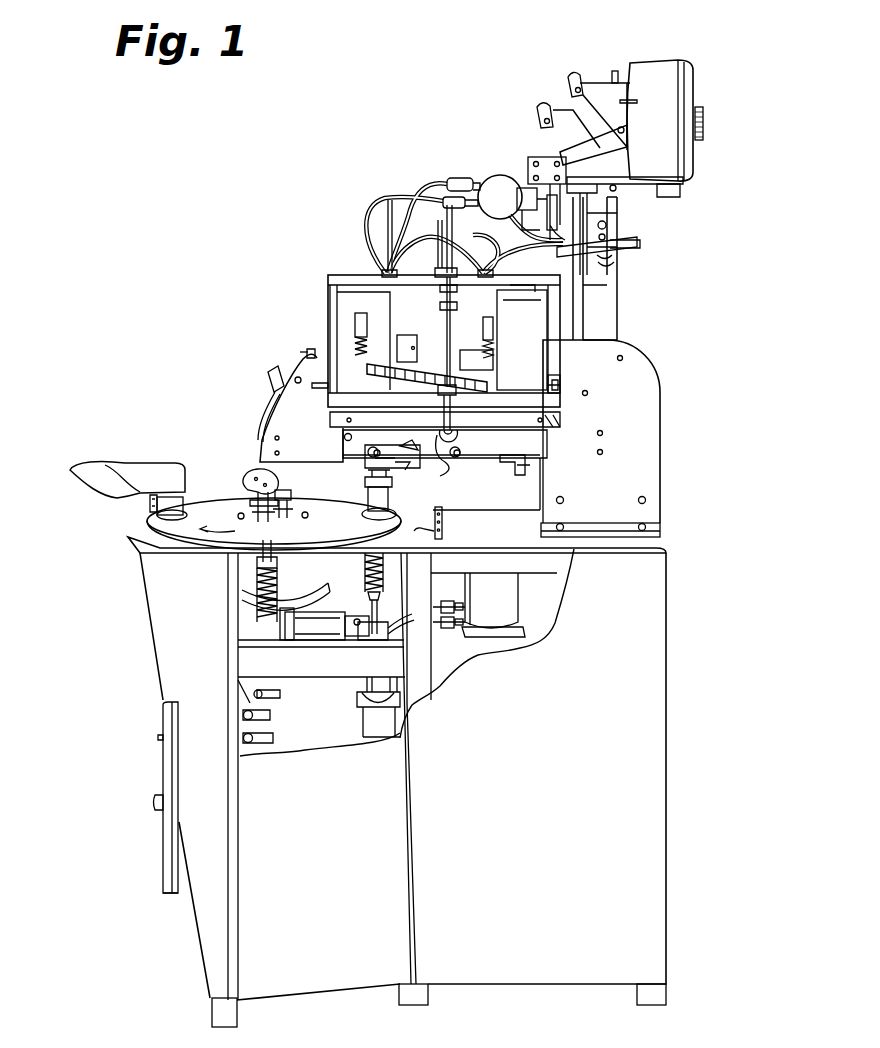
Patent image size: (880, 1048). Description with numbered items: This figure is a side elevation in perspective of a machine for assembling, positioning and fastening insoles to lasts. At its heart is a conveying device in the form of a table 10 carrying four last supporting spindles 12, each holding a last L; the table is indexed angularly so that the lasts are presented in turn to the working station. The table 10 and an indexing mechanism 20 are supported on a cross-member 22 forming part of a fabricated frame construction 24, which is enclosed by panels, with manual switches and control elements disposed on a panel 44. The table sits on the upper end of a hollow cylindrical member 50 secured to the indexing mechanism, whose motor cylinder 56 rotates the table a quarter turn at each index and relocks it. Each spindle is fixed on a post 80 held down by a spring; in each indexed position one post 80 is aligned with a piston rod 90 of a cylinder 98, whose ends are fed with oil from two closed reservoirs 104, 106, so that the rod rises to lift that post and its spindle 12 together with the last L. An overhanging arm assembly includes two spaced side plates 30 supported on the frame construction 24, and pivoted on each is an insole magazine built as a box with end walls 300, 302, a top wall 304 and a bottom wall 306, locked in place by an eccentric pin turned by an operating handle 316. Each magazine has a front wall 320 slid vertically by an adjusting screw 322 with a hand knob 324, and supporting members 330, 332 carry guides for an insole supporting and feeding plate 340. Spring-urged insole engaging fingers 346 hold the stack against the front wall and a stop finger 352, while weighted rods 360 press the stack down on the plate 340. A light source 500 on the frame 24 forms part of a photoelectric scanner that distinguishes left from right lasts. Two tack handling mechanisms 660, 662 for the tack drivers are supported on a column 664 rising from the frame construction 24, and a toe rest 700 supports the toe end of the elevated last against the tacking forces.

The table 10 is at (162, 533).
The last supporting spindle 12 is at (185, 500).
The last L is at (130, 490).
The indexing mechanism 20 is at (260, 627).
The cross-member 22 is at (350, 682).
The frame construction 24 is at (153, 678).
The side plate 30 is at (660, 468).
The panel 44 is at (163, 878).
The hollow cylindrical member 50 is at (306, 582).
The motor cylinder 56 is at (342, 640).
The post 80 is at (372, 508).
The piston rod 90 is at (378, 596).
The cylinder 98 is at (382, 686).
The reservoir 104 is at (518, 606).
The reservoir 106 is at (452, 630).
The end wall 300 is at (602, 312).
The end wall 302 is at (328, 290).
The top wall 304 is at (346, 273).
The bottom wall 306 is at (548, 430).
The operating handle 316 is at (306, 353).
The front wall 320 is at (549, 330).
The adjusting screw 322 is at (465, 332).
The hand knob 324 is at (395, 248).
The supporting member 330 is at (560, 385).
The supporting member 332 is at (325, 407).
The insole supporting and feeding plate 340 is at (558, 385).
The insole engaging finger 346 is at (395, 378).
The stop finger 352 is at (425, 462).
The rod 360 is at (388, 318).
The light source 500 is at (446, 527).
The tack handling mechanism 660 is at (570, 107).
The tack handling mechanism 662 is at (703, 92).
The column 664 is at (618, 297).
The toe rest 700 is at (505, 470).